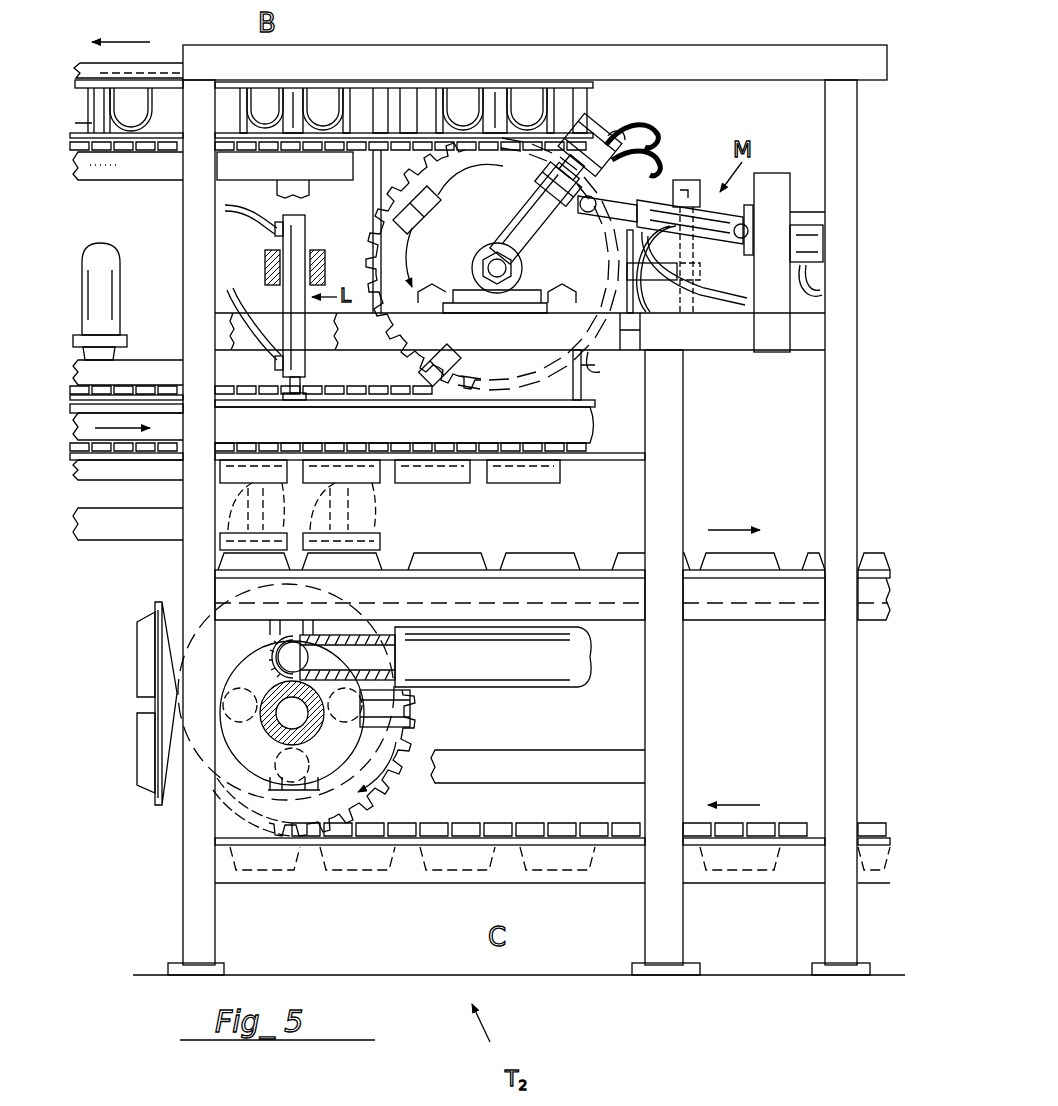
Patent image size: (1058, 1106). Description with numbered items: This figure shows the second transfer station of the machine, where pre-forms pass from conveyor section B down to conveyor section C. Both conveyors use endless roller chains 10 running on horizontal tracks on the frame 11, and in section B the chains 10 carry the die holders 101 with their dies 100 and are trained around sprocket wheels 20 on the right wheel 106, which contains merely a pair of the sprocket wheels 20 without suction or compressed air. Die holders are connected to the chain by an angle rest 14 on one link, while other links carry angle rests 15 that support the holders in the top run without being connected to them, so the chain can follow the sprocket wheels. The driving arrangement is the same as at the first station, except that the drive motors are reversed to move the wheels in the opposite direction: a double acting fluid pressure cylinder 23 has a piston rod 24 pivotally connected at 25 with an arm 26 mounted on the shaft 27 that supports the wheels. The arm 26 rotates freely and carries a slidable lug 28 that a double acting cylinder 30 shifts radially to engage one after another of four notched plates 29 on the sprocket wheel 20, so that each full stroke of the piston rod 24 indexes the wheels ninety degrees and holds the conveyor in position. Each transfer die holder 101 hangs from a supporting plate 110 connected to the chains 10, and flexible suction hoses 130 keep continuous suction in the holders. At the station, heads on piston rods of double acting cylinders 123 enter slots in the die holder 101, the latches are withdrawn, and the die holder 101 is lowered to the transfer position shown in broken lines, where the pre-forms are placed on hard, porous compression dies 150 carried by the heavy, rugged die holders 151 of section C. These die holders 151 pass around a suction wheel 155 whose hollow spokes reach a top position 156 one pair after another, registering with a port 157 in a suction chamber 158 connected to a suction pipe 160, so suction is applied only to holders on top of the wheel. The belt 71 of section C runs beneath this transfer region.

The endless roller chain 10 is at (146, 160).
The frame 11 is at (183, 880).
The angle rest 14 is at (610, 277).
The angle rest 15 is at (592, 366).
The sprocket wheel 20 is at (372, 254).
The double acting fluid pressure cylinder 23 is at (710, 250).
The piston rod 24 is at (612, 234).
The pivotal connection 25 is at (588, 212).
The arm 26 is at (536, 227).
The shaft 27 is at (489, 268).
The slidable lug 28 is at (552, 218).
The notched plate 29 is at (538, 166).
The double acting cylinder 30 is at (615, 140).
The conveyor belt 71 is at (734, 605).
The die 100 is at (692, 182).
The die holder 101 is at (675, 172).
The right wheel 106 is at (495, 195).
The supporting plate 110 is at (596, 408).
The double acting fluid pressure cylinder 123 is at (307, 223).
The flexible suction hose 130 is at (626, 313).
The compression die 150 is at (470, 552).
The die holder 151 is at (161, 602).
The suction wheel 155 is at (412, 700).
The top position 156 is at (270, 633).
The port 157 is at (280, 660).
The suction chamber 158 is at (380, 640).
The suction pipe 160 is at (534, 690).